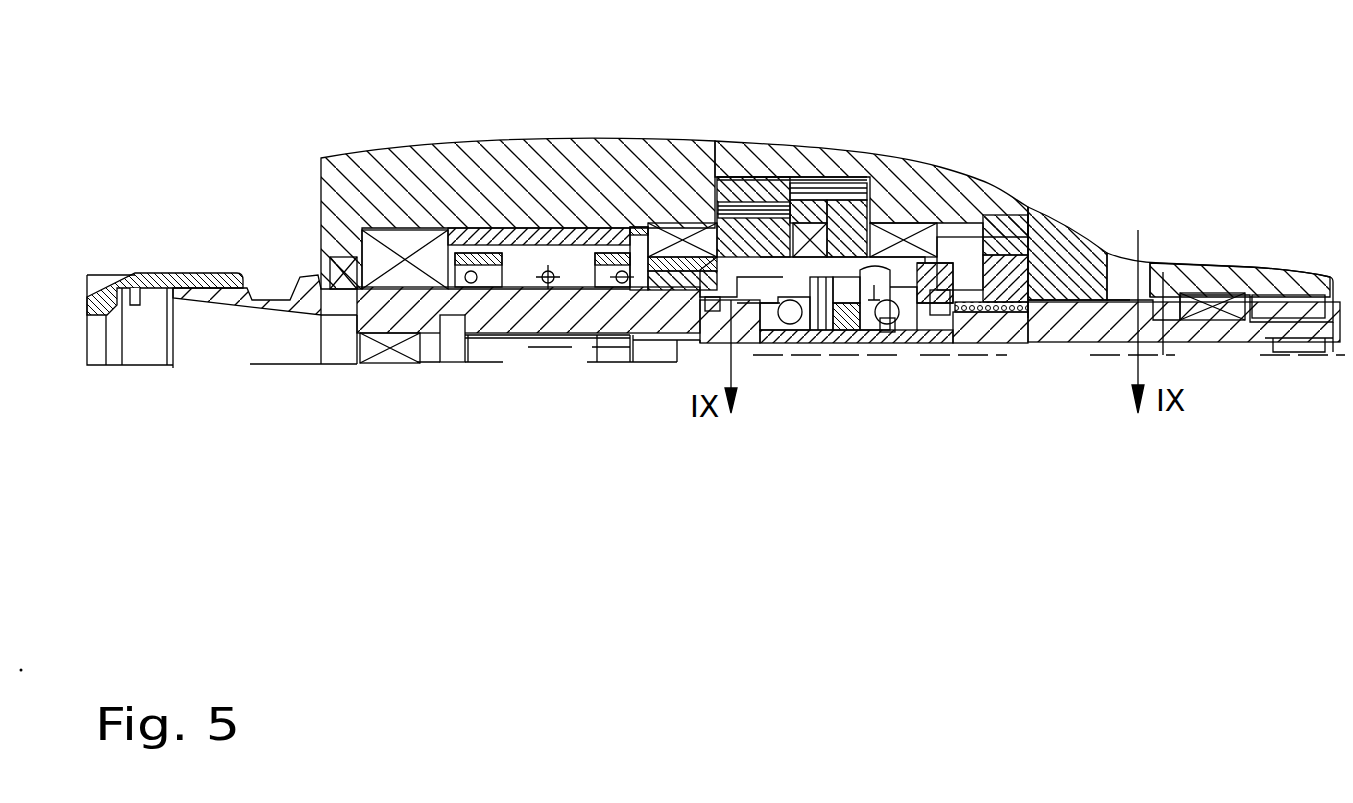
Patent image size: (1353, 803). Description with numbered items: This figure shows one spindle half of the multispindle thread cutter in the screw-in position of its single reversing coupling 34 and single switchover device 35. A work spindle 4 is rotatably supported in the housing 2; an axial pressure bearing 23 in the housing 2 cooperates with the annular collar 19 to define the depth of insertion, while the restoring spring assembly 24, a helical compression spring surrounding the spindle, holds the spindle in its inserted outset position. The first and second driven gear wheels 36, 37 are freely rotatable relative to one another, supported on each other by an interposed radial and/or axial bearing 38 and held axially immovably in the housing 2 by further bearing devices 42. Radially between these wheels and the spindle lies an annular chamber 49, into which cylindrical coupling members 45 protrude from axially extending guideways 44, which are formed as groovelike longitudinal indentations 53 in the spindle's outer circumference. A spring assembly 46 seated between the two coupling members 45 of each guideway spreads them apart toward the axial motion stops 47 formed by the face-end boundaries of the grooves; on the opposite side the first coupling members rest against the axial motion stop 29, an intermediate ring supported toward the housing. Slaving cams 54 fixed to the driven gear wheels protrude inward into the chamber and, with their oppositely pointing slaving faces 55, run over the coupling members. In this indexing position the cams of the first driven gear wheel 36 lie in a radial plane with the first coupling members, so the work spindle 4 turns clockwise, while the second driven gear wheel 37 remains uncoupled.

The housing 2 is at (370, 192).
The work spindle 4 is at (598, 330).
The annular collar 19 is at (1052, 252).
The axial pressure bearing 23 is at (995, 215).
The restoring spring assembly 24 is at (519, 268).
The axial motion stop 29 is at (1005, 275).
The single reversing coupling 34 is at (778, 213).
The single switchover device 35 is at (907, 240).
The first driven gear wheel 36 is at (873, 240).
The second driven gear wheel 37 is at (690, 240).
The radial and/or axial bearing 38 is at (787, 195).
The bearing device 42 is at (600, 215).
The guideway 44 is at (868, 335).
The coupling member 45 is at (792, 335).
The spring assembly 46 is at (850, 303).
The axial motion stop 47 is at (827, 257).
The annular chamber 49 is at (760, 202).
The longitudinal indentation 53 is at (868, 331).
The slaving cam 54 is at (712, 325).
The slaving face 55 is at (705, 202).